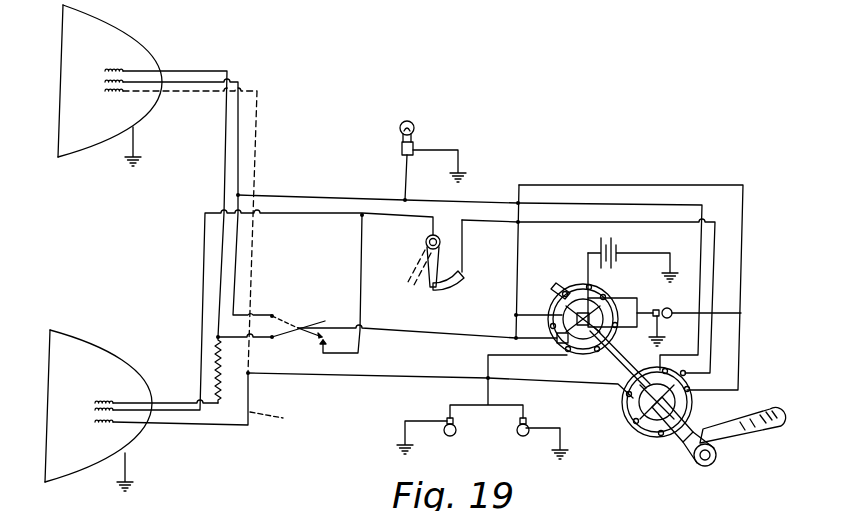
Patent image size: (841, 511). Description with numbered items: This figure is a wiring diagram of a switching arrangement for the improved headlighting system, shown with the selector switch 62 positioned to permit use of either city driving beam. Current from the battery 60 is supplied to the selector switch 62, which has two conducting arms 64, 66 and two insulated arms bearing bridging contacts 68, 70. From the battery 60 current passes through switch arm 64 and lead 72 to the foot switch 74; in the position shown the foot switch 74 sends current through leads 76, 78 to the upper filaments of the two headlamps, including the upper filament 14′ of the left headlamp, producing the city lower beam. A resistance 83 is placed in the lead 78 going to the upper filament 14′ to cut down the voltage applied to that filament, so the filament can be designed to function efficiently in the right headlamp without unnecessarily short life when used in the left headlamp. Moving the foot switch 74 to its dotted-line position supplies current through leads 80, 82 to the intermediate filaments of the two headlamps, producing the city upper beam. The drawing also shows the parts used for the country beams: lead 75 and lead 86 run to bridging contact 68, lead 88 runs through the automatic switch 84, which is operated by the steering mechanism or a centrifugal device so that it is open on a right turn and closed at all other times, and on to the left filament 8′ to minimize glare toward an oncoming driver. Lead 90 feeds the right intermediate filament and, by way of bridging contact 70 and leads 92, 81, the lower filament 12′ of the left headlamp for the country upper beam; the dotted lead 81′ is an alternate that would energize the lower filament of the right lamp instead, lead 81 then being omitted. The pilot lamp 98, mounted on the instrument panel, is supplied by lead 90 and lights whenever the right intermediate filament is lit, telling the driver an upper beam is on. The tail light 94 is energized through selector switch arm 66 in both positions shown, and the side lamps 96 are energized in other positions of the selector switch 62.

The left filament 8′ is at (100, 85).
The lower filament of the left headlamp 12′ is at (118, 70).
The upper filament of the left headlamp 14′ is at (110, 92).
The lead 81′ is at (258, 112).
The lead 80 is at (238, 158).
The lead 76 is at (218, 283).
The lead 78 is at (183, 402).
The resistance 83 is at (216, 365).
The lead 81 is at (211, 401).
The foot switch 74 is at (299, 328).
The lead 82 is at (360, 233).
The lead 72 is at (386, 331).
The lead 90 is at (313, 195).
The lead 88 is at (373, 200).
The pilot lamp 98 is at (414, 132).
The automatic switch 84 is at (434, 267).
The lead 86 is at (519, 258).
The battery 60 is at (620, 247).
The conducting arm 66 is at (628, 298).
The tail light 94 is at (741, 313).
The lead 75 is at (531, 315).
The selector switch 62 is at (580, 349).
The conducting arm 64 is at (556, 338).
The bridging contact 70 is at (625, 417).
The bridging contact 68 is at (690, 392).
The lead 92 is at (392, 380).
The side lamps 96 is at (518, 435).